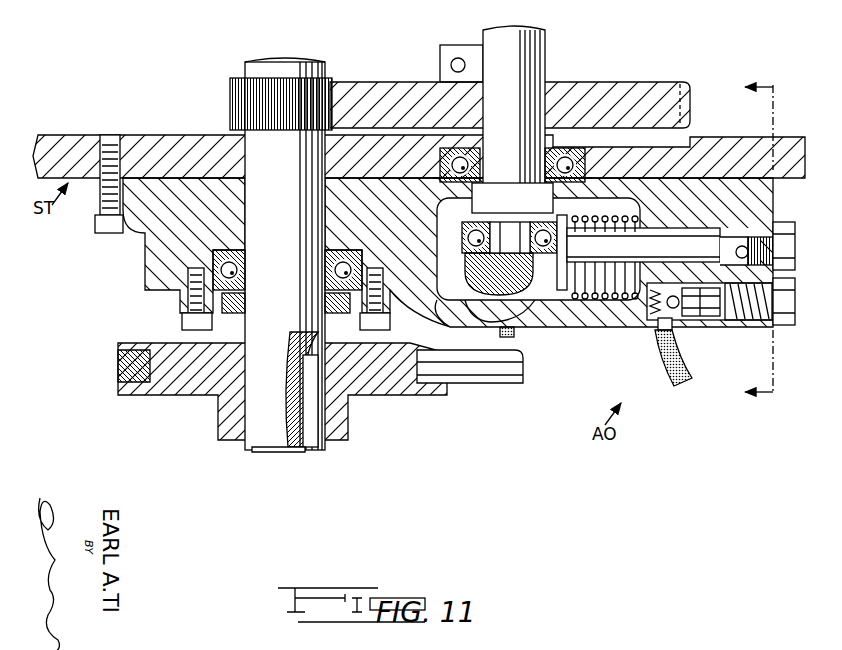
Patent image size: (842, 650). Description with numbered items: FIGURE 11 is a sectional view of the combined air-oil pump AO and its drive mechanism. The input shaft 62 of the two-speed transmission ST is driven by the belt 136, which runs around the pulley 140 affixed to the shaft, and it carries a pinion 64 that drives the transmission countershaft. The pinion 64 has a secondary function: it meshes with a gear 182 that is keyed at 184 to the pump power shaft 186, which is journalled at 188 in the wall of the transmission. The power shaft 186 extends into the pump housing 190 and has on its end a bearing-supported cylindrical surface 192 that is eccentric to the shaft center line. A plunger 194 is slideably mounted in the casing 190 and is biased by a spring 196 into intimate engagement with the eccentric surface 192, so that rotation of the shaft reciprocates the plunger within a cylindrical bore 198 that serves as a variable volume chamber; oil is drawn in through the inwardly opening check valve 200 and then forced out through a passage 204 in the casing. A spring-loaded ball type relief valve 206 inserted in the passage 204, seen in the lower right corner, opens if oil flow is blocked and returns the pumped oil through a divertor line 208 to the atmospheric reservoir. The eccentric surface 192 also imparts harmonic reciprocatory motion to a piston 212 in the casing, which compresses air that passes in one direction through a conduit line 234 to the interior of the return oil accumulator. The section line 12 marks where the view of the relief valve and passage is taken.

The section line 12— 12 is at (779, 242).
The input shaft 62 is at (312, 72).
The pinion 64 is at (246, 90).
The belt 136 is at (505, 362).
The pulley 140 is at (243, 432).
The gear 182 is at (392, 92).
The key 184 is at (546, 117).
The pump power shaft 186 is at (530, 48).
The journal 188 is at (524, 160).
The pump housing 190 is at (602, 327).
The eccentric cylindrical surface 192 is at (468, 245).
The plunger 194 is at (658, 252).
The spring 196 is at (605, 292).
The cylindrical bore 198 is at (745, 250).
The check valve 200 is at (786, 258).
The passage 204 is at (705, 318).
The relief valve 206 is at (745, 322).
The divertor line 208 is at (663, 385).
The piston 212 is at (548, 322).
The conduit line 234 is at (498, 335).